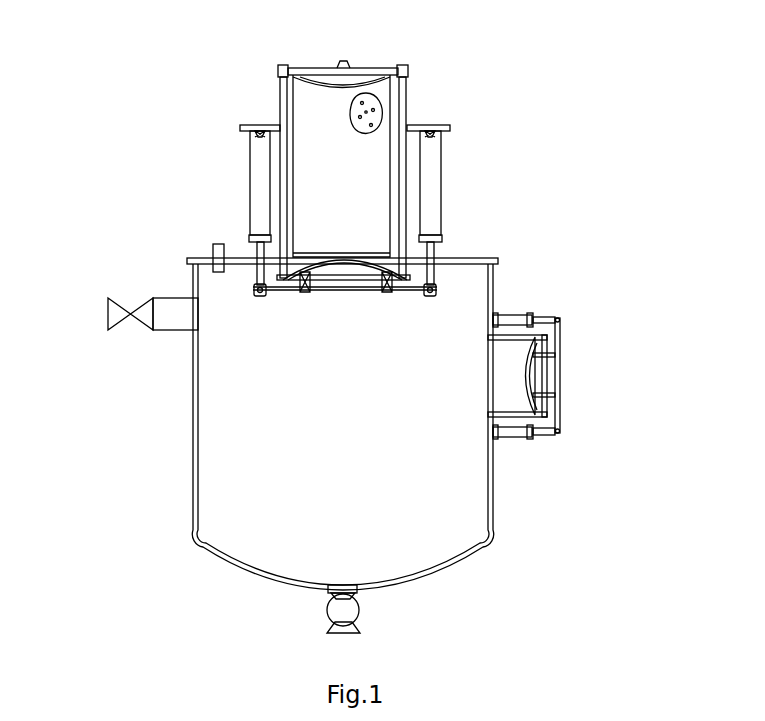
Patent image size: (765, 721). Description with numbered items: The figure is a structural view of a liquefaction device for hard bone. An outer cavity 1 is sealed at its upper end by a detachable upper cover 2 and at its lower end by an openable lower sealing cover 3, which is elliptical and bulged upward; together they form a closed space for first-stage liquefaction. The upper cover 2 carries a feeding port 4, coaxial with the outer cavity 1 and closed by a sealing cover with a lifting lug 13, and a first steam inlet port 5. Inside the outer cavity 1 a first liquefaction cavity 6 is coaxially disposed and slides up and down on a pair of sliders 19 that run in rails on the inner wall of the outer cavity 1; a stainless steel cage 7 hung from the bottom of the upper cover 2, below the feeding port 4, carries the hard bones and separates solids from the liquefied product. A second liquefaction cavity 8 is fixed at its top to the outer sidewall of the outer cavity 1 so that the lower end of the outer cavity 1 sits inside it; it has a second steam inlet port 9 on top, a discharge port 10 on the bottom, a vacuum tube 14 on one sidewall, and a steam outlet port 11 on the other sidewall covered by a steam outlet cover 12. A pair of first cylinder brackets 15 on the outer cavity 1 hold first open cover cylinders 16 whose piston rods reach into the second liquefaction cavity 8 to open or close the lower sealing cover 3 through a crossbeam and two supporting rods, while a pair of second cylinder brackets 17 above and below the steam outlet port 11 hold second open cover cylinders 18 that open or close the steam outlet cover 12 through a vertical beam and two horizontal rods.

The outer cavity 1 is at (410, 113).
The upper cover 2 is at (280, 70).
The lower sealing cover 3 is at (258, 292).
The feeding port 4 is at (320, 72).
The first steam inlet port 5 is at (396, 72).
The first liquefaction cavity 6 is at (407, 107).
The stainless steel cage 7 is at (392, 100).
The second liquefaction cavity 8 is at (193, 438).
The second steam inlet port 9 is at (215, 248).
The discharge port 10 is at (357, 588).
The steam outlet port 11 is at (530, 437).
The steam outlet cover 12 is at (537, 393).
The lifting lug 13 is at (340, 62).
The vacuum tube 14 is at (167, 298).
The first cylinder brackets 15 is at (262, 131).
The first open cover cylinders 16 is at (252, 160).
The second cylinder brackets 17 is at (495, 317).
The second open cover cylinders 18 is at (527, 314).
The sliders 19 is at (282, 138).